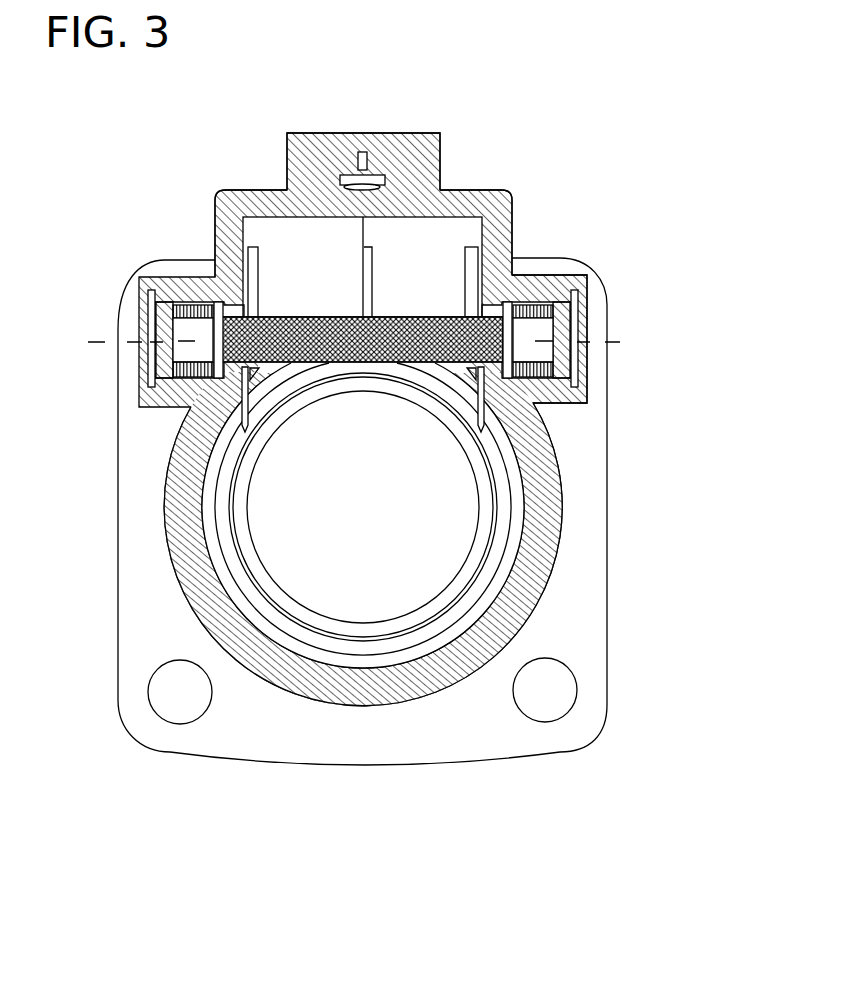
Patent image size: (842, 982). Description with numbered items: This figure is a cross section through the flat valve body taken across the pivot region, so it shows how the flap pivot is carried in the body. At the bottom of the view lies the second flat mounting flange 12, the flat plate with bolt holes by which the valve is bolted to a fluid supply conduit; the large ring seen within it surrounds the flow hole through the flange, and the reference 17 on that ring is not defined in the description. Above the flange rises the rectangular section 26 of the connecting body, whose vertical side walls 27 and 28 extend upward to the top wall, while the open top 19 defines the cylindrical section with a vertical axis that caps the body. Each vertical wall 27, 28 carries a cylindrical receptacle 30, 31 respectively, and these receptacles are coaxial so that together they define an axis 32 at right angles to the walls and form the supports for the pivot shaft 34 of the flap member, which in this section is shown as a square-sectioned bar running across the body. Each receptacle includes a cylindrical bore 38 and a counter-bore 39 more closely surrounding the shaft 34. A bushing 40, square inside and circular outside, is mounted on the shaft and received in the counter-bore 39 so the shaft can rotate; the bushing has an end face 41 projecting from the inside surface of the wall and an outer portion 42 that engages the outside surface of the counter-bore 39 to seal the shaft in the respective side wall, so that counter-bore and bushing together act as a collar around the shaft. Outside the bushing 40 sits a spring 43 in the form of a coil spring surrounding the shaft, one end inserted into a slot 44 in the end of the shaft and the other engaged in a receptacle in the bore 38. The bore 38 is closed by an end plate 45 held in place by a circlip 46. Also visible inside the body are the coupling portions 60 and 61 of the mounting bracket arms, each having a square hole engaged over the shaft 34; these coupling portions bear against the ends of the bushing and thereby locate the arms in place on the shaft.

The second flat mounting flange 12 is at (457, 742).
The bearing ring 17 is at (505, 600).
The open top 19 is at (447, 163).
The rectangular section 26 is at (517, 207).
The vertical side wall 27 is at (217, 222).
The vertical side wall 28 is at (507, 223).
The cylindrical receptacle 30 is at (160, 262).
The cylindrical receptacle 31 is at (542, 277).
The axis 32 is at (95, 338).
The pivot shaft 34 is at (345, 300).
The cylindrical bore 38 is at (225, 310).
The counter-bore 39 is at (238, 305).
The bushing 40 is at (244, 373).
The end face 41 is at (480, 377).
The outer portion 42 is at (503, 317).
The spring 43 is at (183, 370).
The slot 44 is at (183, 342).
The end plate 45 is at (580, 350).
The circlip 46 is at (575, 365).
The coupling portion 60 is at (262, 317).
The coupling portion 61 is at (470, 288).